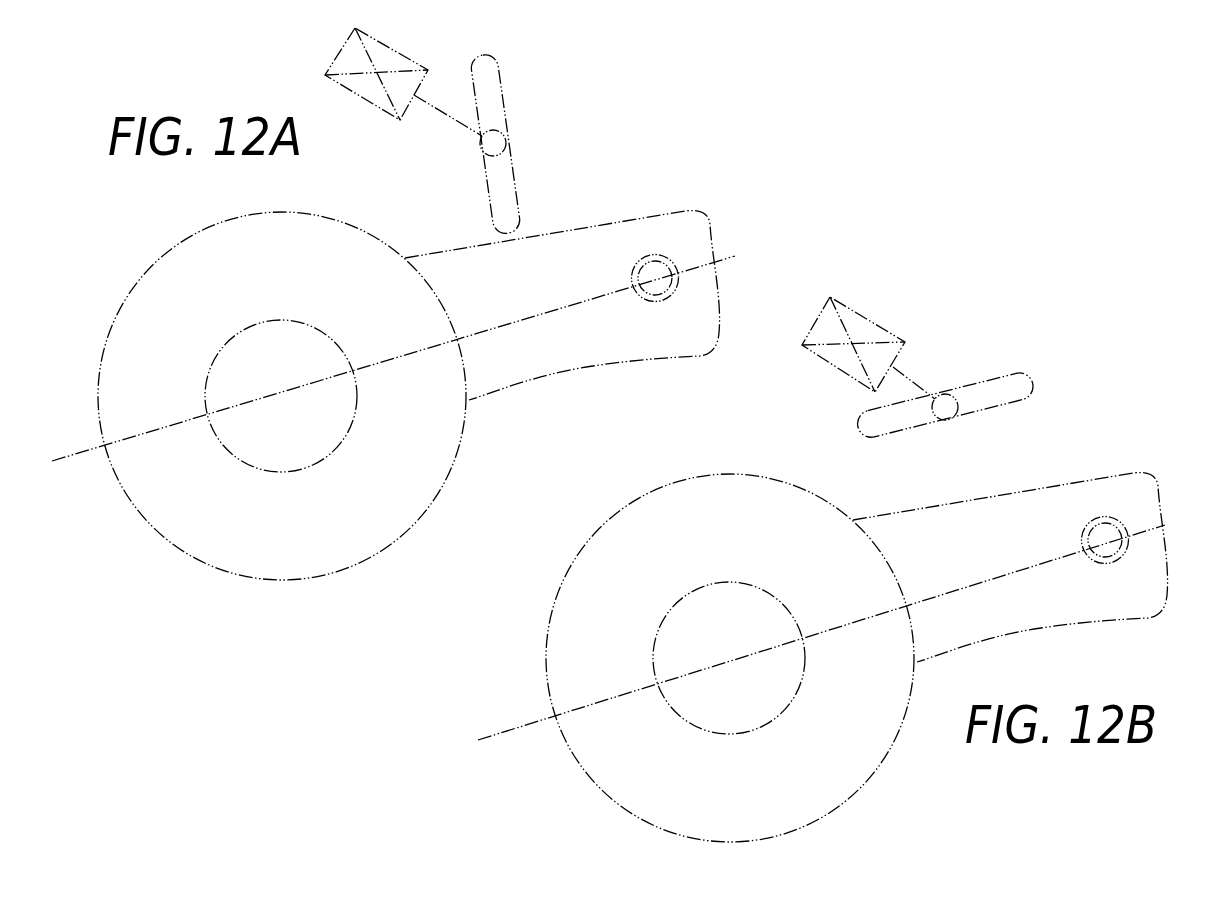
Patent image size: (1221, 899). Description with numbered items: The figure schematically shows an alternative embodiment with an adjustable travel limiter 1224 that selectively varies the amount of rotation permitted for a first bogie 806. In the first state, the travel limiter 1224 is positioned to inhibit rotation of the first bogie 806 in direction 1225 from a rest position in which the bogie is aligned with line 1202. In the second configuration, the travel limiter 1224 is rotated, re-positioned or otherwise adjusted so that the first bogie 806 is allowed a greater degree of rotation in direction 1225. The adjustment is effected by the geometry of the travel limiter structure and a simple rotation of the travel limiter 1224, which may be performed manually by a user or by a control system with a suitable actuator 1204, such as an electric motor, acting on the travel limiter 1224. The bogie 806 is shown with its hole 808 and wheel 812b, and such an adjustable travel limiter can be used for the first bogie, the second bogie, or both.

In FIG. 12A, the first bogie 806 is at (523, 365).
In FIG. 12B, the first bogie 806 is at (951, 590).
In FIG. 12A, the arm mounting hole 808 is at (684, 250).
In FIG. 12B, the arm mounting hole 808 is at (1135, 518).
In FIG. 12A, the wheel 812b is at (343, 568).
In FIG. 12B, the wheel 812b is at (870, 773).
In FIG. 12A, the line 1202 is at (728, 258).
In FIG. 12B, the line 1202 is at (480, 733).
In FIG. 12A, the actuator 1204 is at (361, 109).
In FIG. 12B, the actuator 1204 is at (806, 378).
In FIG. 12A, the travel limiter 1224 is at (550, 141).
In FIG. 12B, the travel limiter 1224 is at (1062, 377).
In FIG. 12A, the direction 1225 is at (517, 246).
In FIG. 12B, the direction 1225 is at (990, 573).